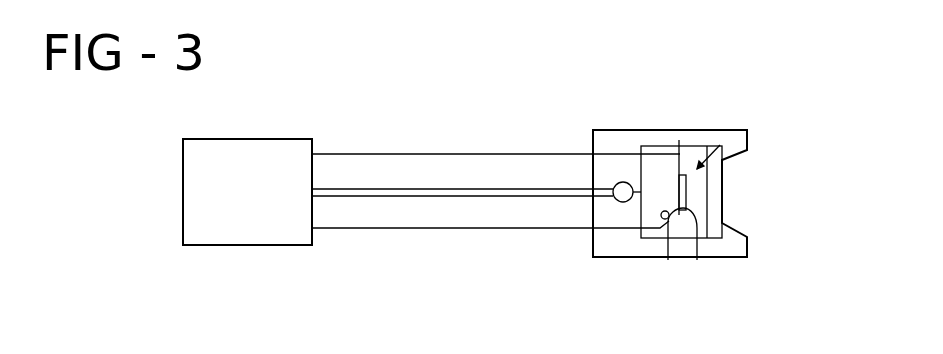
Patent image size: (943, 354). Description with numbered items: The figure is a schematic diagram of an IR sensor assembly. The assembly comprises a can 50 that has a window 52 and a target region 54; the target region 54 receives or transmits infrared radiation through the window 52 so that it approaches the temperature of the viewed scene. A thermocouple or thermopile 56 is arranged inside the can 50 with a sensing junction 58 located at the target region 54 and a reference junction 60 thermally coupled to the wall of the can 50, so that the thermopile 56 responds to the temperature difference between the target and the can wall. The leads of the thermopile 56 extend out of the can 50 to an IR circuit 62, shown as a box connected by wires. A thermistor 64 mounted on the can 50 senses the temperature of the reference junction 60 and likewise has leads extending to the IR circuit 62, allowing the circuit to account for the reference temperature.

The can 50 is at (635, 258).
The window 52 is at (722, 193).
The target region 54 is at (697, 260).
The thermocouple or thermopile 56 is at (720, 145).
The sensing junction 58 is at (667, 260).
The reference junction 60 is at (681, 152).
The IR circuit 62 is at (183, 189).
The thermistor 64 is at (622, 182).